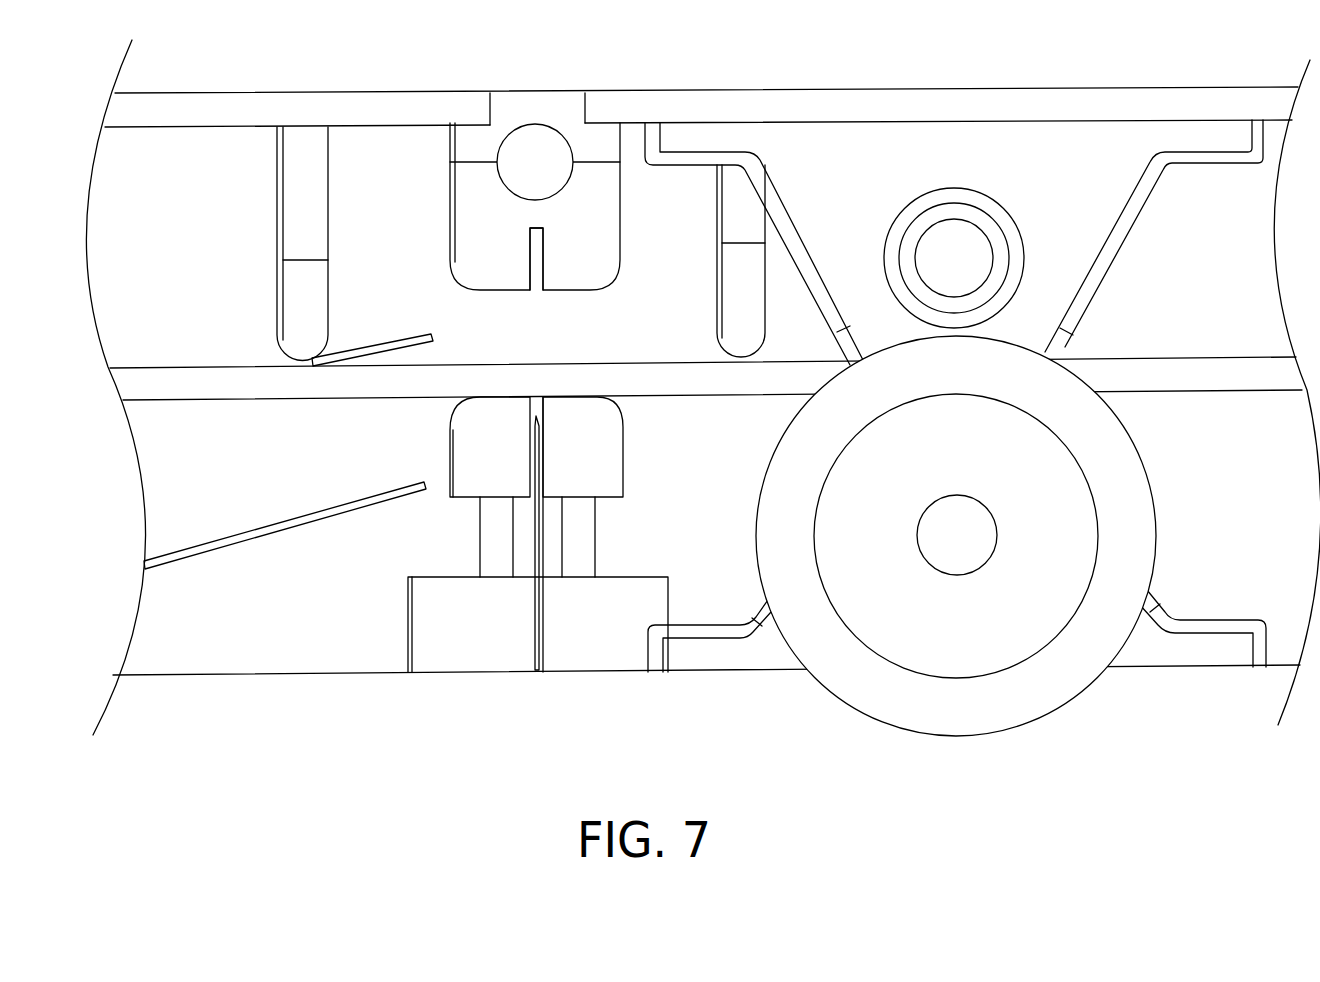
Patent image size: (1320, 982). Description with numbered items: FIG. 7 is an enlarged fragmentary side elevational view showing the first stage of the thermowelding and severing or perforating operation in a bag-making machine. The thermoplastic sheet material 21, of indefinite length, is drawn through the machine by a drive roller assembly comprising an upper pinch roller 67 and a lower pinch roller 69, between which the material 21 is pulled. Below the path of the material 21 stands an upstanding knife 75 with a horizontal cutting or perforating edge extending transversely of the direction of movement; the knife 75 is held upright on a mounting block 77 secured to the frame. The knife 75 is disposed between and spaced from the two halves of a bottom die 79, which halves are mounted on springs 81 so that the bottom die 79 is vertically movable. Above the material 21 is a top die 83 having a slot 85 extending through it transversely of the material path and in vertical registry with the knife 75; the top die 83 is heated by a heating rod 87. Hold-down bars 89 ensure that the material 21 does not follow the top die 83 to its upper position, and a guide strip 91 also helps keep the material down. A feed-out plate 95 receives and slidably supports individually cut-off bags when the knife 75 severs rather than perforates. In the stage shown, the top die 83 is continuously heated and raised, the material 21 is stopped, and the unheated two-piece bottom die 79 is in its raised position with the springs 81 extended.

The thermoplastic sheet material 21 is at (247, 382).
The upper pinch roller 67 is at (935, 238).
The lower pinch roller 69 is at (937, 523).
The knife 75 is at (527, 523).
The mounting block 77 is at (425, 622).
The bottom die 79 is at (470, 432).
The springs 81 is at (493, 507).
The top die 83 is at (517, 240).
The slot 85 is at (537, 282).
The heating rod 87 is at (518, 182).
The hold-down bars 89 is at (297, 320).
The guide strip 91 is at (363, 347).
The feed-out plate 95 is at (233, 533).